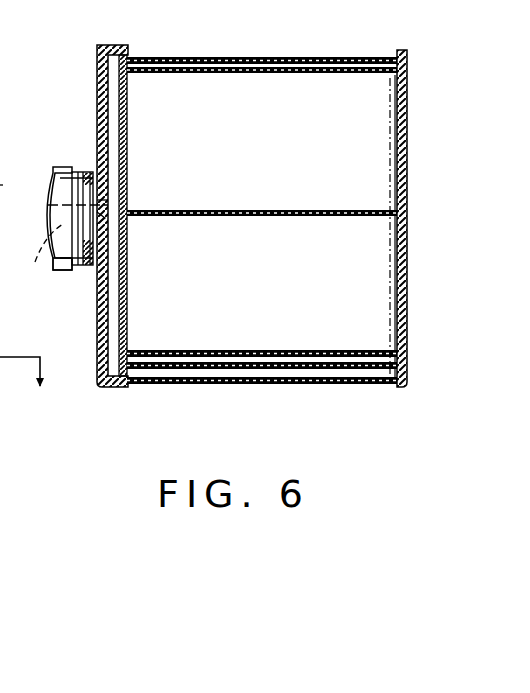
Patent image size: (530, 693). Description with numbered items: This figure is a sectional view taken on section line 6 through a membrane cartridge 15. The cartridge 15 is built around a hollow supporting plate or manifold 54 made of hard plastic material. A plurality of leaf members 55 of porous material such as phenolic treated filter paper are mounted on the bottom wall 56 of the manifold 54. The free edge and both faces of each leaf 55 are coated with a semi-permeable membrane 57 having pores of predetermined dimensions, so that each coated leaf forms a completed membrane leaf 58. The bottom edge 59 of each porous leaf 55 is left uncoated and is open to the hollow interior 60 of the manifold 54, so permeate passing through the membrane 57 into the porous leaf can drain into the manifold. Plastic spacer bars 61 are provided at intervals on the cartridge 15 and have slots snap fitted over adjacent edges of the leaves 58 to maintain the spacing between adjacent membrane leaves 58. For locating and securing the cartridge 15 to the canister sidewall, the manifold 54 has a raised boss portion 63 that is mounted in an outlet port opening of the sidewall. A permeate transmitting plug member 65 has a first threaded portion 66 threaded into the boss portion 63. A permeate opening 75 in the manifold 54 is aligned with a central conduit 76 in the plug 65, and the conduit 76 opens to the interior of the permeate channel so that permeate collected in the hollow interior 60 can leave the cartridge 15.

The section line 6 is at (20, 377).
The membrane cartridge 15 is at (218, 387).
The hollow supporting plate or manifold 54 is at (103, 389).
The leaf member 55 is at (363, 60).
The bottom wall 56 is at (127, 110).
The semi-permeable membrane 57 is at (330, 58).
The completed membrane leaf 58 is at (297, 388).
The bottom edge 59 is at (118, 352).
The hollow interior 60 is at (110, 312).
The plastic spacer bar 61 is at (402, 286).
The raised boss portion 63 is at (97, 170).
The permeate transmitting plug member 65 is at (63, 272).
The first threaded portion 66 is at (83, 198).
The permeate opening 75 is at (100, 215).
The central conduit 76 is at (40, 254).